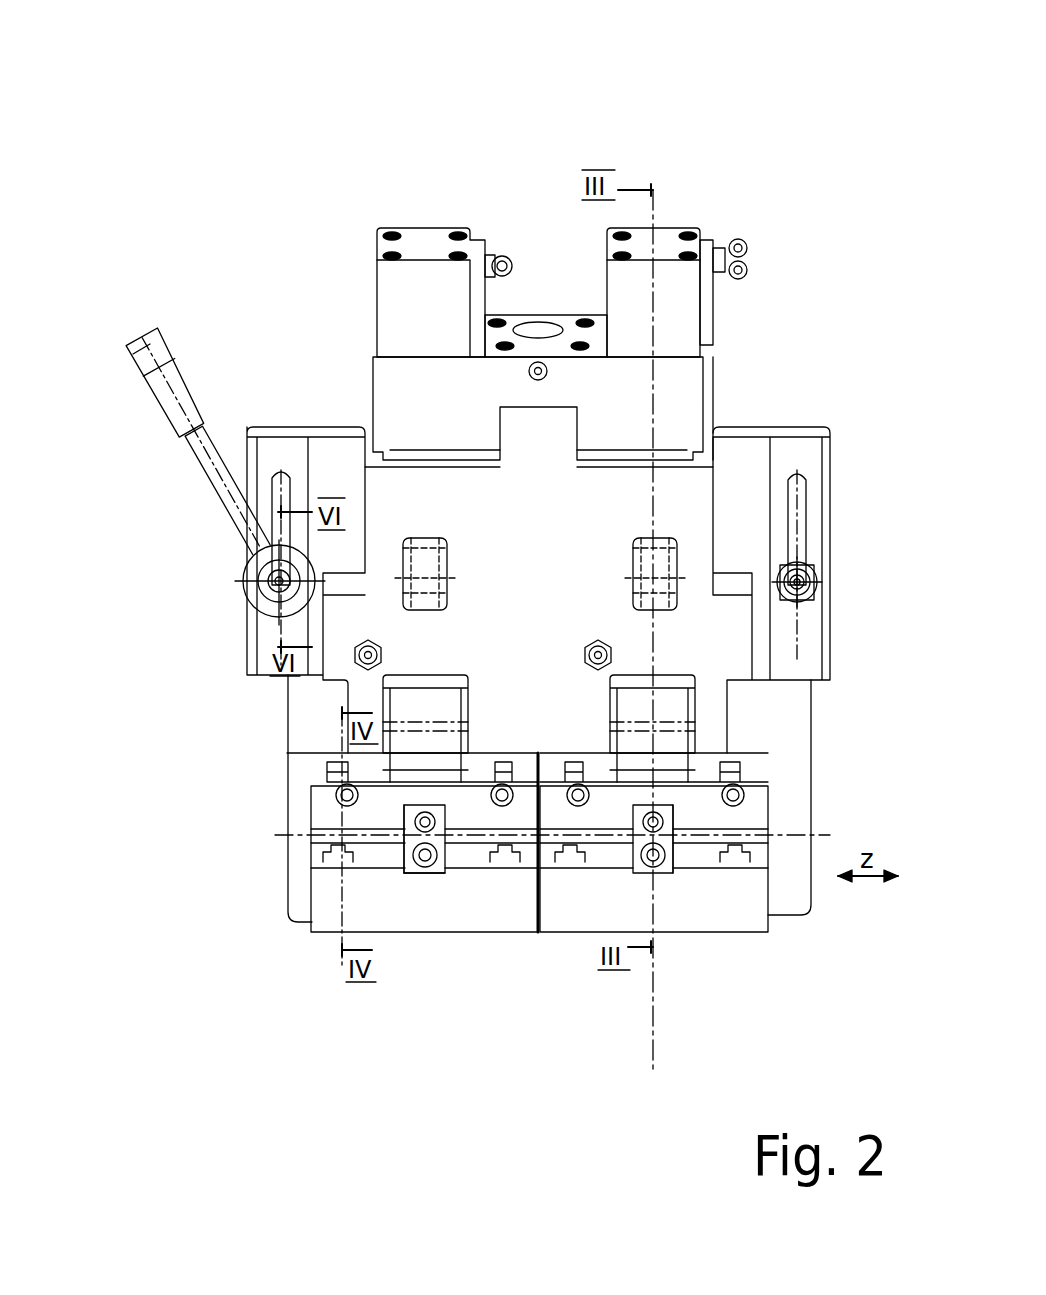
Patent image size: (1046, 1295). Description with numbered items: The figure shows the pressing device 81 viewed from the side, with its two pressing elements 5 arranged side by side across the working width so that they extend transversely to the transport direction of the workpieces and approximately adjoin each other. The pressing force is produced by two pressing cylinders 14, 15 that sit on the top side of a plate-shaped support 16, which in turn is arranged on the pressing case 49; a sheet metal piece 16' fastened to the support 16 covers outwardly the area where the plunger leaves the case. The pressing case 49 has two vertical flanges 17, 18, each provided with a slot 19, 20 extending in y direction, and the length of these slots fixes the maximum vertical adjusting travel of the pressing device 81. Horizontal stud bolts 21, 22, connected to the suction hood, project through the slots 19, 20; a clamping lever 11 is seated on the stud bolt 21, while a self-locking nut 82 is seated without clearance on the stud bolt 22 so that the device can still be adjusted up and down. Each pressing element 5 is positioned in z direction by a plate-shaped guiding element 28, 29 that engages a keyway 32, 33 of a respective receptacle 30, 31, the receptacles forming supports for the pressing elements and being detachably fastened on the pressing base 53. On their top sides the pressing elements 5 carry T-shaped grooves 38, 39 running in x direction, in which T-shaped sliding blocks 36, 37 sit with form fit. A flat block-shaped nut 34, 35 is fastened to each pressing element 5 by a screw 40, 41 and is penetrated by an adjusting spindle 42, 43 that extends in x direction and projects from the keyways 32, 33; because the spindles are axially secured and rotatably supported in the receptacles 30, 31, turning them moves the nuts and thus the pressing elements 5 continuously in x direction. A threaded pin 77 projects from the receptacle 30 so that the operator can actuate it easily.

The pressing device 81 is at (567, 40).
The pressing element 5 is at (445, 912).
The clamping lever 11 is at (172, 388).
The pressing cylinder 14 is at (427, 303).
The pressing cylinder 15 is at (678, 285).
The support 16 is at (538, 310).
The sheet metal piece 16' is at (777, 352).
The flange 17 is at (337, 482).
The flange 18 is at (825, 428).
The slot 19 is at (281, 472).
The slot 20 is at (800, 505).
The stud bolt 21 is at (262, 612).
The stud bolt 22 is at (808, 595).
The guiding element 28 is at (395, 880).
The guiding element 29 is at (628, 872).
The receptacle 30 is at (324, 802).
The receptacle 31 is at (775, 793).
The keyway 32 is at (405, 814).
The keyway 33 is at (810, 824).
The nut 34 is at (408, 875).
The nut 35 is at (672, 872).
The sliding block 36 is at (340, 862).
The sliding block 37 is at (547, 890).
The groove 38 is at (402, 868).
The groove 39 is at (675, 870).
The screw 40 is at (423, 868).
The screw 41 is at (649, 868).
The adjusting spindle 42 is at (430, 815).
The adjusting spindle 43 is at (650, 815).
The pressing case 49 is at (685, 497).
The pressing base 53 is at (425, 766).
The threaded pin 77 is at (577, 784).
The self-locking nut 82 is at (812, 575).